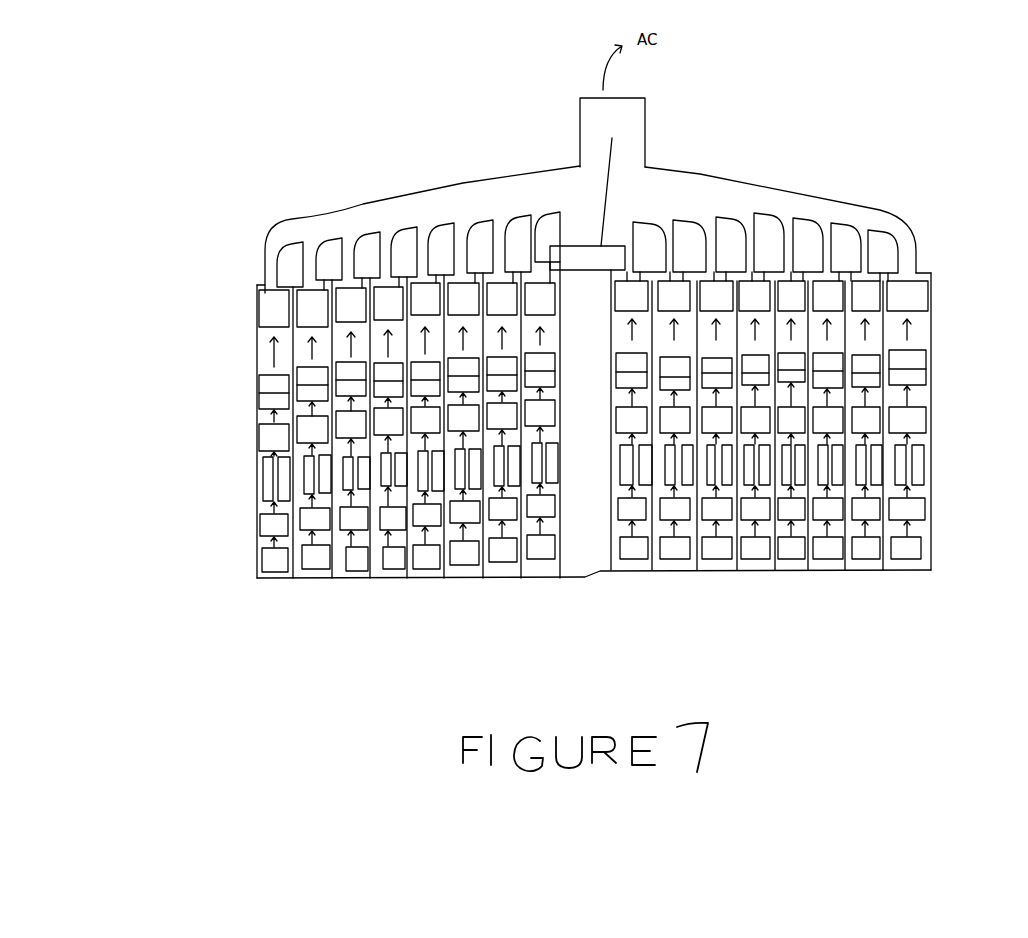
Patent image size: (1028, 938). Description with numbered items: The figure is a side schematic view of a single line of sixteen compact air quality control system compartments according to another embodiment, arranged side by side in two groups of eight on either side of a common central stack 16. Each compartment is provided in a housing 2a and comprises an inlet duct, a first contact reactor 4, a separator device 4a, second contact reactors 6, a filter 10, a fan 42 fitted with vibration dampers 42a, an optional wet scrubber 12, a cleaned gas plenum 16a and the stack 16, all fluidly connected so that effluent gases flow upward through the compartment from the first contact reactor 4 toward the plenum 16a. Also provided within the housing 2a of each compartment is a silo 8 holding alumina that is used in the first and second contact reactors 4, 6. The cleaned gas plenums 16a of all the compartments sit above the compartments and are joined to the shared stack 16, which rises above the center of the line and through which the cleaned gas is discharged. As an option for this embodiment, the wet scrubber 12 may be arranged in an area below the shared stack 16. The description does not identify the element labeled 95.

The housing 2a is at (257, 579).
The first contact reactor 4 is at (257, 563).
The separator device 4a is at (262, 528).
The second contact reactors 6 is at (263, 470).
The silo 8 is at (262, 487).
The filter 10 is at (258, 437).
The wet scrubber 12 is at (257, 315).
The stack 16 is at (645, 147).
The cleaned gas plenum 16a is at (265, 262).
The fan 42 is at (258, 378).
The vibration dampers 42a is at (258, 392).
The lip 95 is at (255, 284).